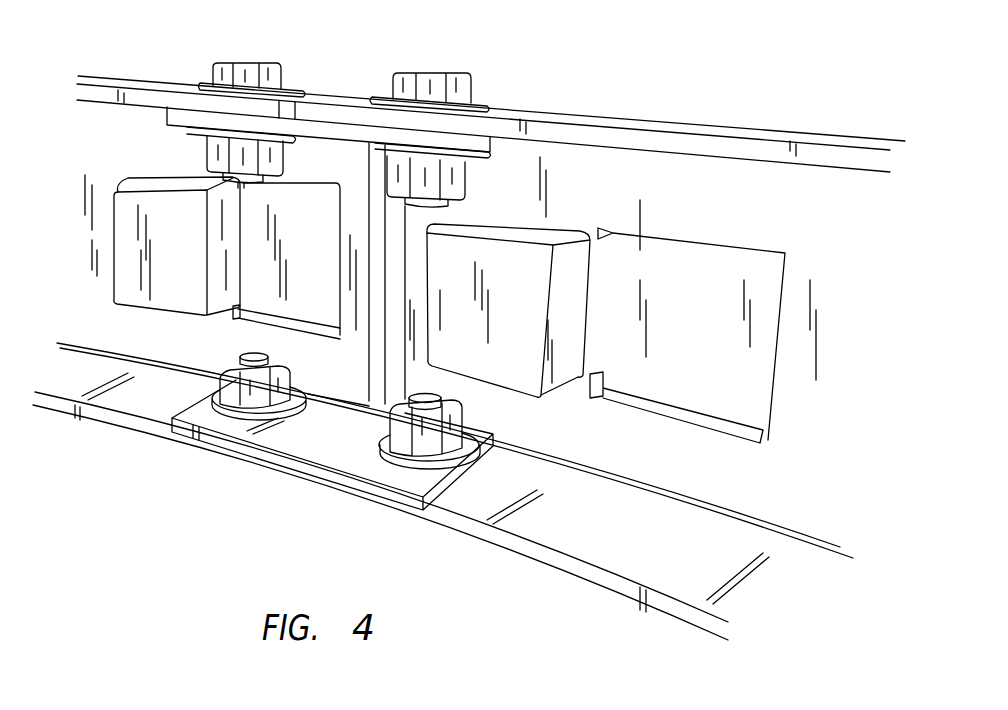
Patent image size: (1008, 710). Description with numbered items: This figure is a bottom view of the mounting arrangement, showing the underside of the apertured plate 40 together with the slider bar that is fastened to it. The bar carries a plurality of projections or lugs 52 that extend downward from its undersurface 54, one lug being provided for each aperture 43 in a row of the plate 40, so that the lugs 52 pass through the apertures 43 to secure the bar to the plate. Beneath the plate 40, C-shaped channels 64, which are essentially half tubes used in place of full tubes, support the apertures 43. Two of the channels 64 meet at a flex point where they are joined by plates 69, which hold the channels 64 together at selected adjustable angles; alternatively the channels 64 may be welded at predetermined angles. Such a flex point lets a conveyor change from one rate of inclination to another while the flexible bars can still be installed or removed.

The apertured plate 40 is at (885, 300).
The aperture 43 is at (712, 247).
The projection 52 is at (127, 183).
The undersurface 54 is at (300, 203).
The channel 64 is at (776, 510).
The plate 69 is at (267, 448).